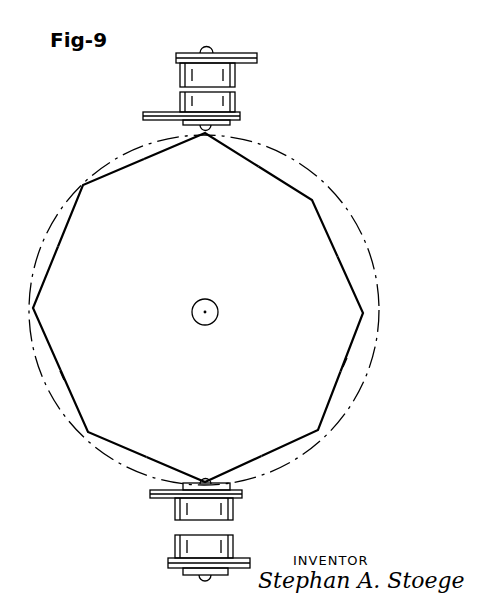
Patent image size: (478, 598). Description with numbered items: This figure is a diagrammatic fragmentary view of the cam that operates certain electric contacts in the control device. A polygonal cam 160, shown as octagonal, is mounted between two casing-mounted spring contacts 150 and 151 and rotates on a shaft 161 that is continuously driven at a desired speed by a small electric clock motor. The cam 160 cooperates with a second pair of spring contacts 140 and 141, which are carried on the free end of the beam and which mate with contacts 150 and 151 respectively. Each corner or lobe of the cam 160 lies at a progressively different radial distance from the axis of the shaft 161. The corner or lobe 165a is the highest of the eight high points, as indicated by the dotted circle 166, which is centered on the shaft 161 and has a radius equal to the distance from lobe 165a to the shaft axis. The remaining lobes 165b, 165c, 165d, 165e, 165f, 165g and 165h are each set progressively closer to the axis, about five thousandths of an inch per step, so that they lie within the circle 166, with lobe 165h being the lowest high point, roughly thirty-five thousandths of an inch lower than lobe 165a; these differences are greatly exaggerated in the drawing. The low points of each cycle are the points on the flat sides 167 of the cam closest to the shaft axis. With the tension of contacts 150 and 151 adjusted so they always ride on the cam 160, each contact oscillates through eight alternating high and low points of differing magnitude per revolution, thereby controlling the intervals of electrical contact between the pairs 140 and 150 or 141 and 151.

The spring contact 140 is at (230, 72).
The spring contact 141 is at (175, 530).
The spring contact 150 is at (240, 117).
The spring contact 151 is at (177, 507).
The polygonal cam 160 is at (206, 306).
The shaft 161 is at (211, 321).
The corner or lobe 165a is at (205, 136).
The corner or lobe 165b is at (85, 187).
The corner or lobe 165c is at (35, 308).
The corner or lobe 165d is at (90, 430).
The corner or lobe 165e is at (207, 479).
The corner or lobe 165f is at (317, 428).
The corner or lobe 165g is at (361, 313).
The corner or lobe 165h is at (297, 212).
The dotted circle 166 is at (360, 225).
The flat sides 167 is at (63, 384).